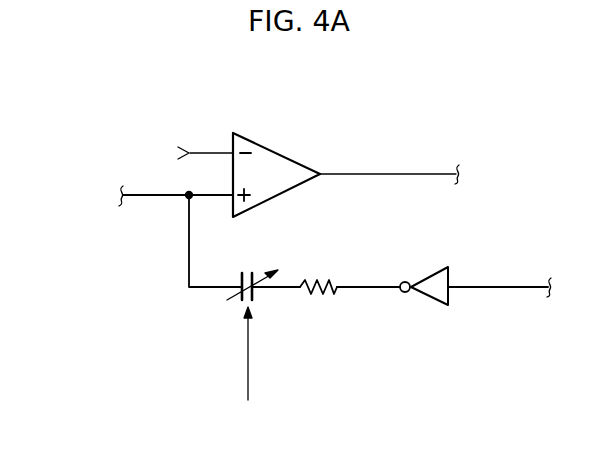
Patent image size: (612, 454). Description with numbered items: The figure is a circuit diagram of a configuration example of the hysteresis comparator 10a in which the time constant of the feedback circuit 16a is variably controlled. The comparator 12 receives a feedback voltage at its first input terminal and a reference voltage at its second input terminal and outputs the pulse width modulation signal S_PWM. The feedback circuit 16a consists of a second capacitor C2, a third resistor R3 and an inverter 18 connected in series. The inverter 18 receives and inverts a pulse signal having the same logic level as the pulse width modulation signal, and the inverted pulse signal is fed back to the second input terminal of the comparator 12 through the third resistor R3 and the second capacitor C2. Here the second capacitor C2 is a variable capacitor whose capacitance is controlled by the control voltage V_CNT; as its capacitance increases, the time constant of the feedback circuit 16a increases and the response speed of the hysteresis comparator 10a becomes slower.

The hysteresis comparator 10a is at (460, 129).
The comparator 12 is at (263, 143).
The feedback circuit 16a is at (483, 334).
The second capacitor C2 is at (247, 270).
The third resistor R3 is at (322, 277).
The inverter 18 is at (416, 272).